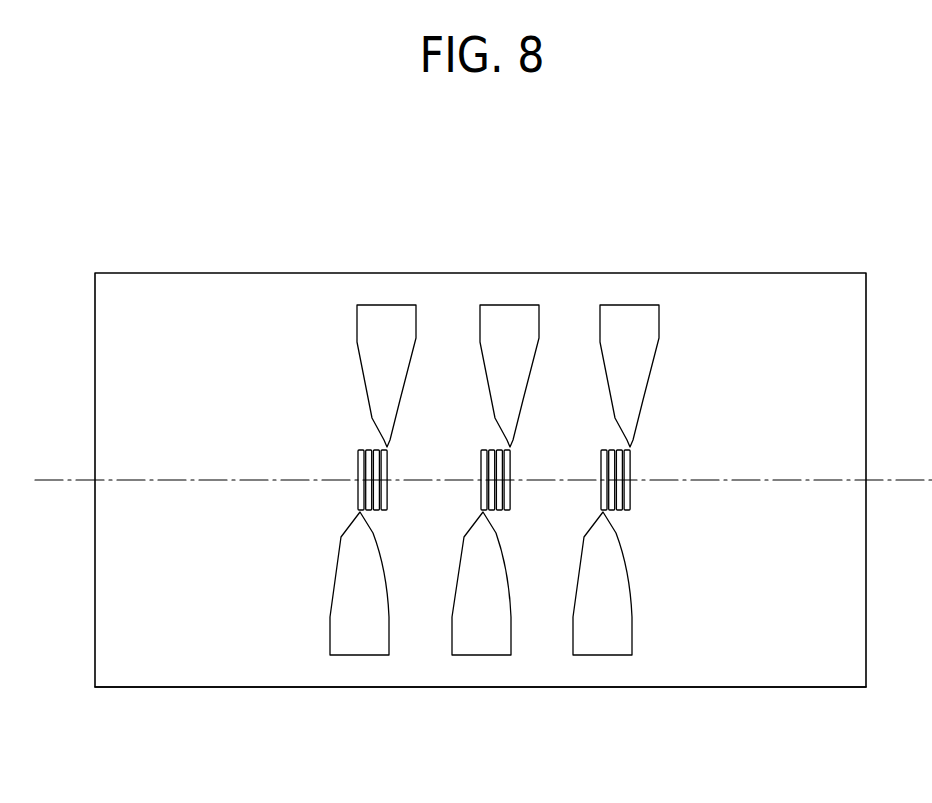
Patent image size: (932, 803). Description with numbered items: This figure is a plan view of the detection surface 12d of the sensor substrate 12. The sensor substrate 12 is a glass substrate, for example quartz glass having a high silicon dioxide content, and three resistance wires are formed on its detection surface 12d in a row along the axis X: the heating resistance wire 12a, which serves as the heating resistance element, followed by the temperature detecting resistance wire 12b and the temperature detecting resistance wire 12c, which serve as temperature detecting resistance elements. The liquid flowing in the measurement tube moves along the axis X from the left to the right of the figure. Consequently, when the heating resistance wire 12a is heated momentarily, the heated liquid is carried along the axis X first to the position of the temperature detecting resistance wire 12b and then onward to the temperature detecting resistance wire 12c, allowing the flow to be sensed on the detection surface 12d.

The sensor substrate 12 is at (748, 240).
The heating resistance wire 12a is at (357, 443).
The temperature detecting resistance wire 12b is at (482, 443).
The temperature detecting resistance wire 12c is at (603, 443).
The detection surface 12d is at (726, 652).
The axis X is at (893, 480).